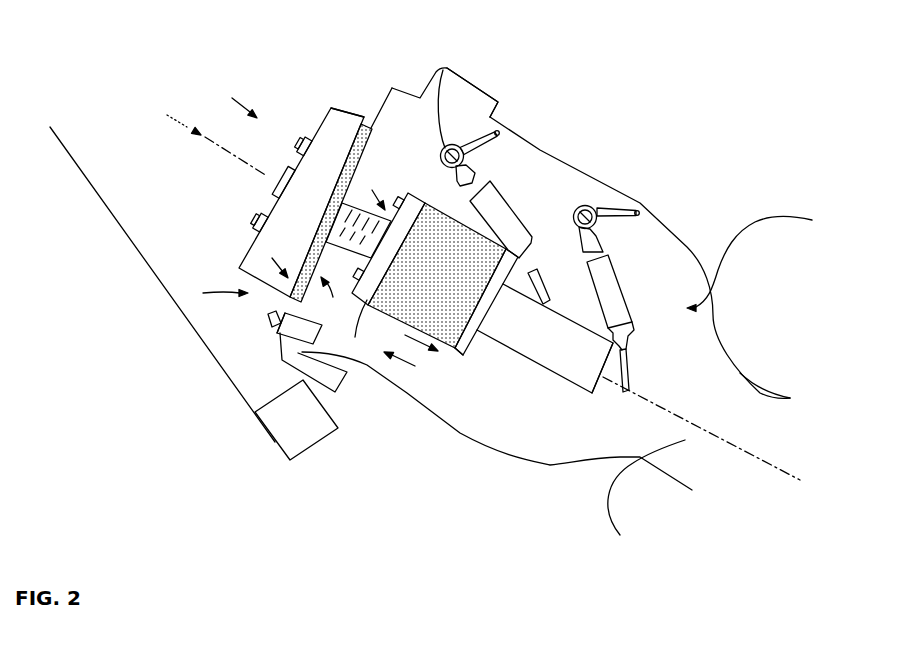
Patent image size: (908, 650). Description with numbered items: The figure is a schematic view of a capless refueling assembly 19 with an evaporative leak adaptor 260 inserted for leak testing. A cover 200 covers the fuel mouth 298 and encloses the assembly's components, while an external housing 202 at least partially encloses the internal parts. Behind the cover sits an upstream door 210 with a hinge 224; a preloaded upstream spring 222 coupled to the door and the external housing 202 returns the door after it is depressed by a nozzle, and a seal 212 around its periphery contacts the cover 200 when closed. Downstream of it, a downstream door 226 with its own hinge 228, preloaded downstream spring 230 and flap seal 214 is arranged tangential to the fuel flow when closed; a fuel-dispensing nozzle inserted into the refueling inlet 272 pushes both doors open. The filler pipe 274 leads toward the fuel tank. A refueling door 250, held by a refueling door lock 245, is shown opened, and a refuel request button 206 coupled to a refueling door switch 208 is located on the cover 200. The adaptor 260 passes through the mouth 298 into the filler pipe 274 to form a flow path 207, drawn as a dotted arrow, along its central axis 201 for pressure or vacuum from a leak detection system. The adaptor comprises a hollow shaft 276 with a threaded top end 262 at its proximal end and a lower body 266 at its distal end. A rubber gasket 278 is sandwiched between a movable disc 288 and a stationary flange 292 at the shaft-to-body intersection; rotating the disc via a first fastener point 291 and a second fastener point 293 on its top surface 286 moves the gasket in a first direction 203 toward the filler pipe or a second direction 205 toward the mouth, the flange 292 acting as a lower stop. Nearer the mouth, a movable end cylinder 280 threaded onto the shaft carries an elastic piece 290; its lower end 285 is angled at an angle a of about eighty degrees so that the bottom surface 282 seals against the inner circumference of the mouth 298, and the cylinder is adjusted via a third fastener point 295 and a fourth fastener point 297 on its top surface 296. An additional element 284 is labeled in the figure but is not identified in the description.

The refueling assembly 19 is at (600, 131).
The cover 200 is at (392, 88).
The central axis 201 is at (788, 472).
The external housing 202 is at (748, 382).
The first direction 203 is at (405, 336).
The second direction 205 is at (402, 364).
The refuel request button 206 is at (277, 330).
The flow path 207 is at (181, 118).
The refueling door switch 208 is at (279, 333).
The upstream door 210 is at (510, 204).
The seal 212 is at (546, 284).
The seal 214 is at (633, 392).
The preloaded upstream spring 222 is at (492, 116).
The hinge 224 is at (443, 70).
The downstream door 226 is at (618, 273).
The hinge 228 is at (590, 204).
The preloaded downstream spring 230 is at (622, 210).
The refueling door lock 245 is at (273, 442).
The refueling door 250 is at (232, 383).
The adaptor 260 is at (233, 105).
The threaded top end 262 is at (268, 180).
The lower body 266 is at (545, 338).
The refueling inlet 272 is at (765, 258).
The filler pipe 274 is at (646, 498).
The hollow shaft 276 is at (358, 230).
The gasket 278 is at (435, 274).
The end cylinder 280 is at (301, 202).
The bottom surface 282 is at (344, 307).
The end wall 284 is at (598, 397).
The lower end 285 is at (362, 107).
The top surface 286 is at (325, 115).
The movable disc 288 is at (298, 352).
The elastic piece 290 is at (369, 128).
The first fastener point 291 is at (356, 271).
The flange 292 is at (465, 350).
The second fastener point 293 is at (396, 200).
The third fastener point 295 is at (254, 212).
The top surface 296 is at (372, 192).
The fourth fastener point 297 is at (296, 142).
The mouth 298 is at (212, 293).
The angle a is at (275, 262).